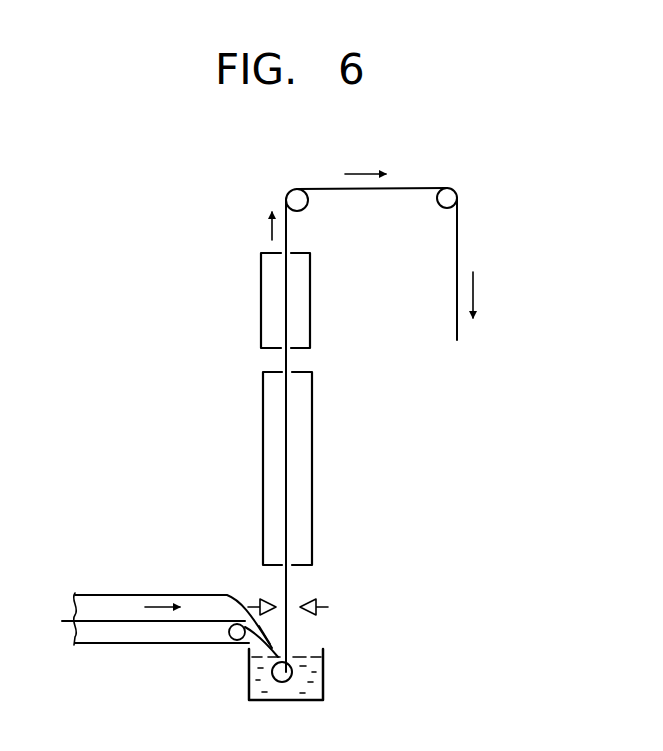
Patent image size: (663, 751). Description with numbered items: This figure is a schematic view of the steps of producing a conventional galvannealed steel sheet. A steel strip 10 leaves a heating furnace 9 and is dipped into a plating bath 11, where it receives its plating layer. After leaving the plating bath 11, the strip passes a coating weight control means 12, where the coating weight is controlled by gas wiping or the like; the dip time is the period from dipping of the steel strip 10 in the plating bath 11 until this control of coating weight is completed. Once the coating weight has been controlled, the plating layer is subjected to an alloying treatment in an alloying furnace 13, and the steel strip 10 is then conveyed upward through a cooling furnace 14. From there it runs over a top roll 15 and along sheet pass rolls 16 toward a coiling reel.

The conveyor belt 9 is at (113, 595).
The fibrous web 10 is at (147, 621).
The liquid bath 11 is at (323, 673).
The yarn / twisted strand 12 is at (300, 592).
The first treatment chamber 13 is at (263, 490).
The second treatment chamber 14 is at (261, 318).
The guide roller 15 is at (286, 197).
The guide roller 16 is at (457, 191).